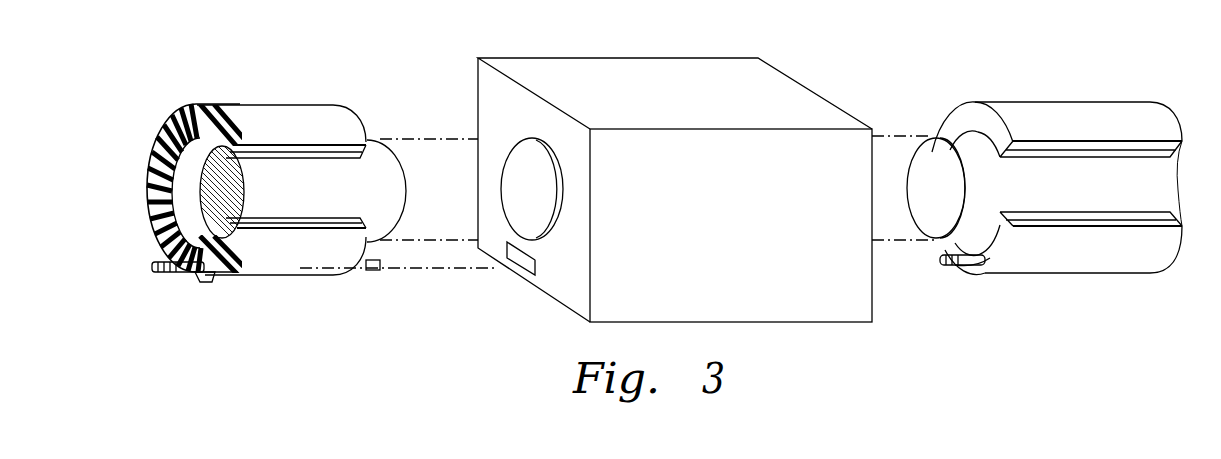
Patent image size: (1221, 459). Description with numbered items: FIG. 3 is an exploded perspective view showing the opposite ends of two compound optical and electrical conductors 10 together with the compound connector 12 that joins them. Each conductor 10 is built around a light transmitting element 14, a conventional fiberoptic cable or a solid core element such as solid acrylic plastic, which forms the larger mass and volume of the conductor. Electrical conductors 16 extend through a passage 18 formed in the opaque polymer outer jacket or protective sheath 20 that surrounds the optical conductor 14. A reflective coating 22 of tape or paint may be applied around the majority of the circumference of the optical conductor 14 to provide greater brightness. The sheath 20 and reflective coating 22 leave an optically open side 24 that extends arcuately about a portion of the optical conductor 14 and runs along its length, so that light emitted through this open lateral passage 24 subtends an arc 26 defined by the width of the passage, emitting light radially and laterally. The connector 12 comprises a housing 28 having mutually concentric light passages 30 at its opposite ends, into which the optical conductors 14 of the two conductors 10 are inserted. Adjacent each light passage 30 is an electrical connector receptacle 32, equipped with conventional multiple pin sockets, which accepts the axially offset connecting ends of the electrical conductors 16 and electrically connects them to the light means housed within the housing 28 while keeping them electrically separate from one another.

The compound optical and electrical conductor 10 is at (661, 210).
The compound connector 12 is at (812, 334).
The light transmitting element 14 is at (323, 204).
The electrical conductors 16 is at (165, 272).
The passage 18 is at (205, 280).
The outer jacket or protective sheath 20 is at (238, 105).
The reflective coating 22 is at (975, 130).
The optically open side 24 is at (255, 165).
The arc 26 is at (367, 224).
The housing 28 is at (725, 202).
The light passages 30 is at (503, 189).
The electrical connector receptacles 32 is at (528, 266).